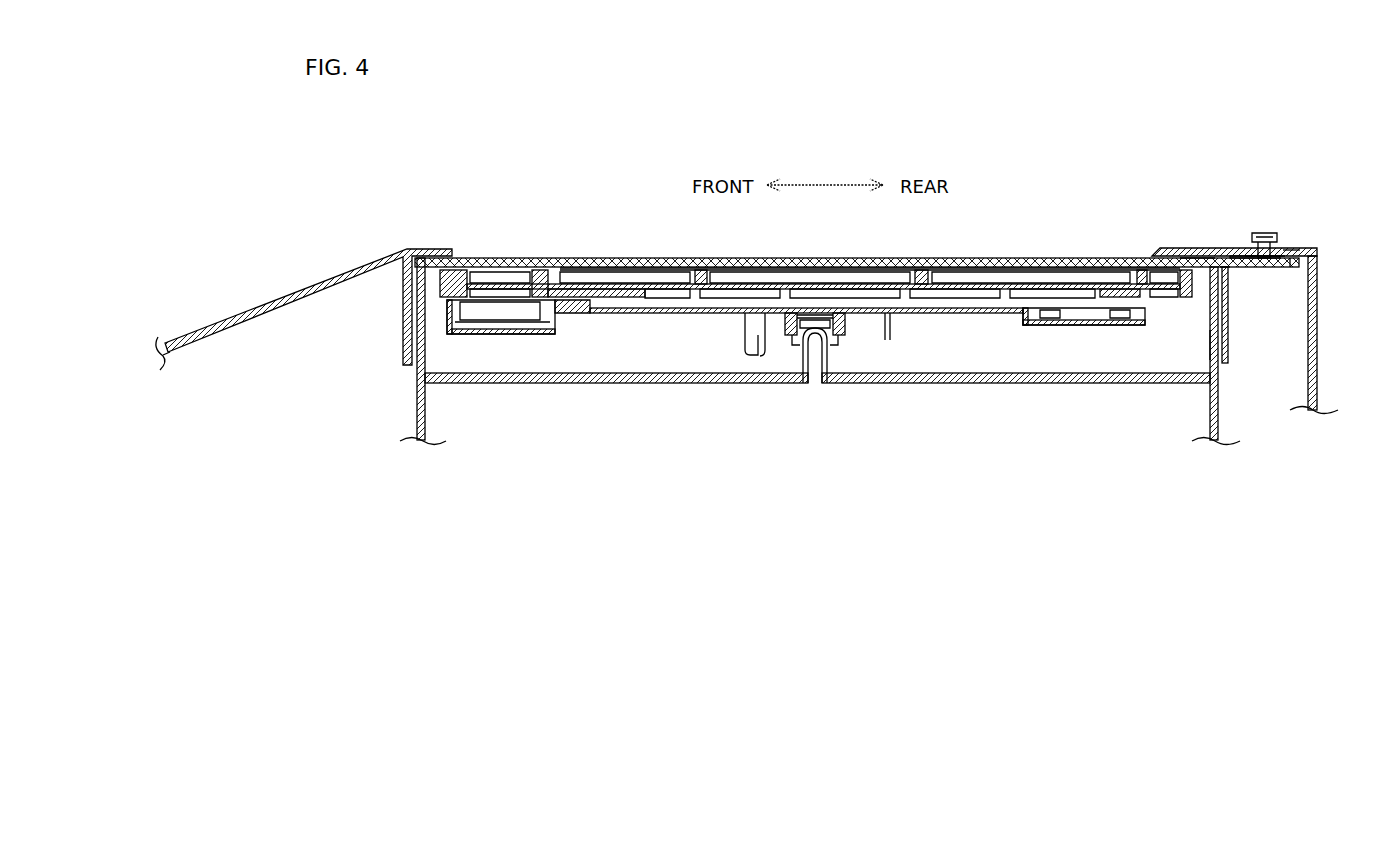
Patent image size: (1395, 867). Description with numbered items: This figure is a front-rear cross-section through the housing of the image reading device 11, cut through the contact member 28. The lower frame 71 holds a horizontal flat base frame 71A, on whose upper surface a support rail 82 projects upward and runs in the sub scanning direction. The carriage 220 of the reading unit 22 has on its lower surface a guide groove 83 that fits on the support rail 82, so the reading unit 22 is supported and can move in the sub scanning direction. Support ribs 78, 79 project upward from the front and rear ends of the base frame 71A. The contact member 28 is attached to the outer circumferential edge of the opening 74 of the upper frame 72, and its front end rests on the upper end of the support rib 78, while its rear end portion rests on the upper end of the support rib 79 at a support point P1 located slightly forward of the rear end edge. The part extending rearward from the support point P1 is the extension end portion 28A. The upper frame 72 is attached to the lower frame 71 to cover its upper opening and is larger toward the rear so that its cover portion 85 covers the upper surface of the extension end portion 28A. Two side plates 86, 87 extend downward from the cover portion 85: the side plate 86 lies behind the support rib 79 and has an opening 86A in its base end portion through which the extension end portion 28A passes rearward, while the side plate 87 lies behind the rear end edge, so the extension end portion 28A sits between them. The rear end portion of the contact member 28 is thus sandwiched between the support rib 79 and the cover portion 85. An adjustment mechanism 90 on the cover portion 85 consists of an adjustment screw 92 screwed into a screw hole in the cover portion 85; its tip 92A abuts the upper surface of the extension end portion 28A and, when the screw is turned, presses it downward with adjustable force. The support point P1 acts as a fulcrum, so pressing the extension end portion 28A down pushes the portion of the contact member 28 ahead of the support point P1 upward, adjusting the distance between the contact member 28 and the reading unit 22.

The image forming apparatus 11 is at (436, 212).
The opening 74 is at (455, 249).
The support rib 78 is at (428, 352).
The contact member 28 is at (1024, 258).
The extension end portion 28A is at (1283, 268).
The upper frame 72 is at (1312, 254).
The side plate 87 is at (1308, 375).
The cover portion 85 is at (1290, 250).
The adjustment screw 92 is at (1265, 234).
The tip 92A is at (1248, 254).
The adjustment mechanism 90 is at (1249, 212).
The support point P1 is at (1202, 256).
The side plate 86 is at (1231, 335).
The opening 86A is at (1232, 271).
The support rib 79 is at (1210, 345).
The lower frame 71 is at (1219, 398).
The base frame 71A is at (1078, 385).
The reading unit 22 is at (632, 330).
The carriage 220 is at (672, 316).
The guide groove 83 is at (848, 337).
The support rail 82 is at (831, 366).